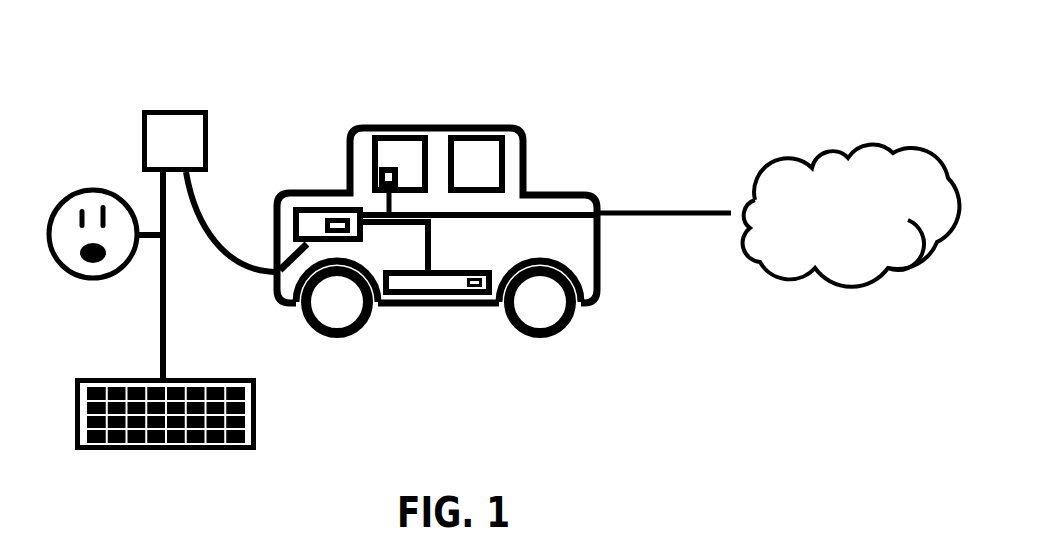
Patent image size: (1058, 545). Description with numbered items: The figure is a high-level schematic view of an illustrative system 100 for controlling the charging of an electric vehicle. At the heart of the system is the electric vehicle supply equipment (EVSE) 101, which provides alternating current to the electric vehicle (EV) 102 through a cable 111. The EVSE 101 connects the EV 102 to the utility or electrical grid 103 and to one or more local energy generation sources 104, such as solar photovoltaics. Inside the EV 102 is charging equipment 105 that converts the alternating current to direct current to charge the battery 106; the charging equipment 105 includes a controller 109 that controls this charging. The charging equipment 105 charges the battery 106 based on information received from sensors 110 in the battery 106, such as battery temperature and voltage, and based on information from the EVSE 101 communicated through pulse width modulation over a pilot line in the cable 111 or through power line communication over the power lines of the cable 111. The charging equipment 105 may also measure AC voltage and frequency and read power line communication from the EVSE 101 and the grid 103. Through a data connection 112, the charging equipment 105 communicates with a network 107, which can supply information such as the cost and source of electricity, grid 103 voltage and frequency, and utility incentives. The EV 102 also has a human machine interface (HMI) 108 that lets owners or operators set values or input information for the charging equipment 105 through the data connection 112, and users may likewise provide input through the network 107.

The system 100 is at (491, 65).
The electric vehicle supply equipment 101 is at (187, 108).
The electric vehicle 102 is at (603, 284).
The utility/electrical grid 103 is at (96, 282).
The local energy generation source 104 is at (118, 452).
The charging equipment 105 is at (327, 207).
The battery 106 is at (448, 297).
The network 107 is at (772, 162).
The human machine interface 108 is at (389, 167).
The controller 109 is at (342, 240).
The sensors 110 is at (470, 297).
The cable 111 is at (219, 262).
The data connection 112 is at (647, 210).